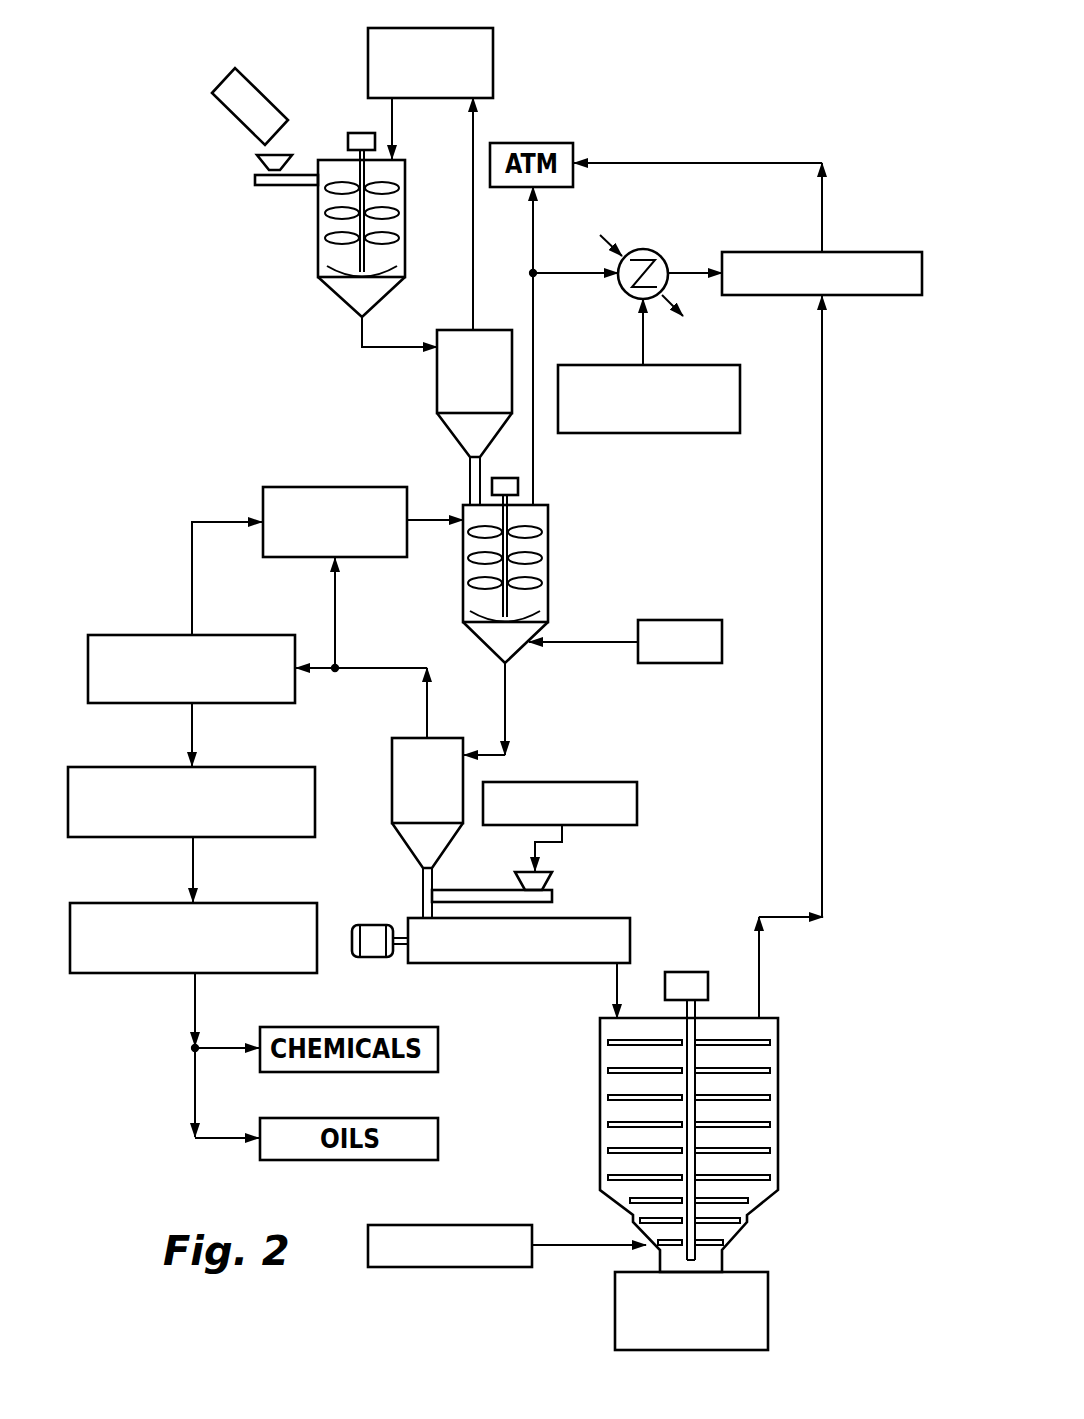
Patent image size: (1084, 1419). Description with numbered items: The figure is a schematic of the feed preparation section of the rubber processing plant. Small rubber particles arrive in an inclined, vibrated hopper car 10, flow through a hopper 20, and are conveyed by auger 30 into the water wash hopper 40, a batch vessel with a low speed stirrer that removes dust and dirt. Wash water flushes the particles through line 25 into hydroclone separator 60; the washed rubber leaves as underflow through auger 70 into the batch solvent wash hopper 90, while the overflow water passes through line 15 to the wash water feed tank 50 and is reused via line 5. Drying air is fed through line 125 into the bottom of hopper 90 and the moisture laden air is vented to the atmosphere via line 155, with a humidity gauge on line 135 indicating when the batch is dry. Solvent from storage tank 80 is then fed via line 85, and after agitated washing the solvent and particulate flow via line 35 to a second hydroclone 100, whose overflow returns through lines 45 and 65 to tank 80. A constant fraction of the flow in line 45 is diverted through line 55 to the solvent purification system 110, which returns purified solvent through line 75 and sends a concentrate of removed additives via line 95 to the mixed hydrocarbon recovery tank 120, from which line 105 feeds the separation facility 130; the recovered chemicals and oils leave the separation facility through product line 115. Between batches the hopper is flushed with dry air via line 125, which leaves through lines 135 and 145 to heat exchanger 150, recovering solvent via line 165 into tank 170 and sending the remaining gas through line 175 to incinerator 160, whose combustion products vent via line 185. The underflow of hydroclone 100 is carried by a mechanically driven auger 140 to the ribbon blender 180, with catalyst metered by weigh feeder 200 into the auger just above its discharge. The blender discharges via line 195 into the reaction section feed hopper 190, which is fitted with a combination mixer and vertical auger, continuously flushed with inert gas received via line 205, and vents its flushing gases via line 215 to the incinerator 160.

The wash water reuse line 5 is at (393, 118).
The hopper car 10 is at (212, 90).
The hydroclone overflow line 15 is at (472, 188).
The hopper 20 is at (257, 162).
The wash hopper discharge line 25 is at (360, 345).
The auger 30 is at (255, 178).
The solvent hopper discharge line 35 is at (505, 698).
The water wash hopper 40 is at (340, 288).
The solvent overflow line 45 is at (426, 676).
The wash water feed tank 50 is at (493, 60).
The solvent diversion line 55 is at (328, 672).
The hydroclone separator 60 is at (436, 390).
The solvent return line 65 is at (334, 600).
The auger 70 is at (469, 483).
The purified solvent return line 75 is at (192, 568).
The wash solvent feed tank 80 is at (338, 487).
The solvent feed line 85 is at (425, 525).
The batch solvent wash hopper 90 is at (480, 638).
The additive concentrate line 95 is at (193, 735).
The second hydroclone 100 is at (392, 805).
The recovered hydrocarbons feed line 105 is at (193, 860).
The solvent purification system 110 is at (160, 635).
The separated products line 115 is at (193, 1070).
The mixed hydrocarbon recovery tank 120 is at (158, 767).
The drying air line 125 is at (578, 642).
The separation facility 130 is at (158, 903).
The hopper vent line 135 is at (534, 455).
The mechanically driven auger 140 is at (423, 892).
The heat exchanger feed line 145 is at (575, 273).
The heat exchanger 150 is at (650, 252).
The atmospheric vent line 155 is at (533, 243).
The incinerator 160 is at (888, 252).
The recovered solvent line 165 is at (645, 350).
The recovered solvent tank 170 is at (680, 433).
The incinerator feed line 175 is at (686, 272).
The ribbon blender 180 is at (505, 958).
The combustion products vent line 185 is at (682, 163).
The reaction section feed hopper 190 is at (775, 1025).
The ribbon blender discharge line 195 is at (612, 985).
The weigh feeder 200 is at (552, 893).
The inert gas line 205 is at (580, 1247).
The flushing gas line 215 is at (788, 915).